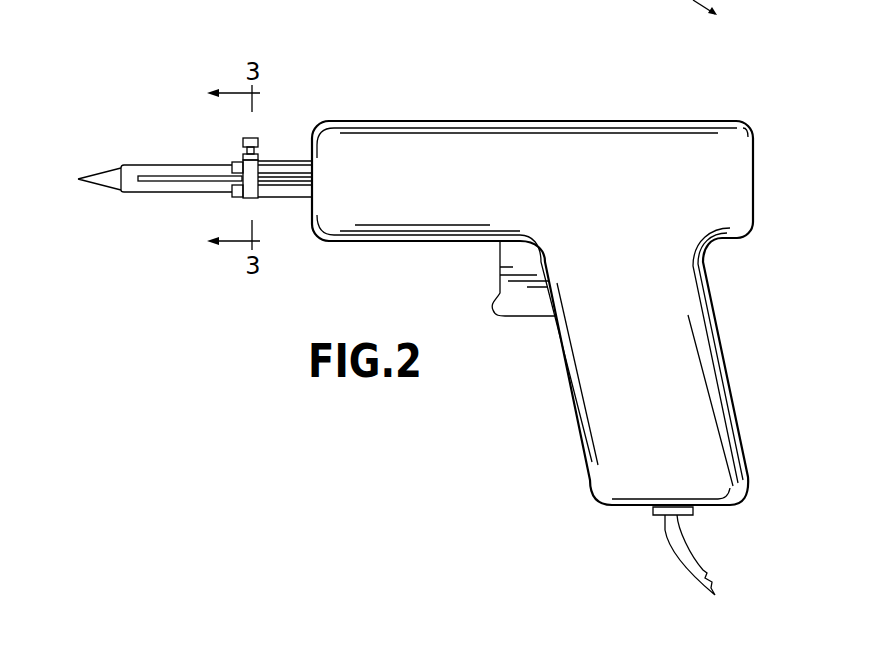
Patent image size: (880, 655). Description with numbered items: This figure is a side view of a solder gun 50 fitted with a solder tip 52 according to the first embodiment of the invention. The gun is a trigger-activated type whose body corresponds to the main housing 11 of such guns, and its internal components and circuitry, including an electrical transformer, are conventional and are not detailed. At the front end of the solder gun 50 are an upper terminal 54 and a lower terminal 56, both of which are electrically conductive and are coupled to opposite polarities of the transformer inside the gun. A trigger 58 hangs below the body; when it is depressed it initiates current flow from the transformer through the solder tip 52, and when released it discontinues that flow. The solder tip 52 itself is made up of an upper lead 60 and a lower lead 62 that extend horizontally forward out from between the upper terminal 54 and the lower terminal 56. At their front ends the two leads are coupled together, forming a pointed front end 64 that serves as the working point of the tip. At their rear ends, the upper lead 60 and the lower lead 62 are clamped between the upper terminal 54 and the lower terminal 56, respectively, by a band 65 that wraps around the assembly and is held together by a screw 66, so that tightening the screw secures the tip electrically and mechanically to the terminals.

The main housing 11 is at (722, 351).
The solder gun 50 is at (552, 257).
The solder tip 52 is at (184, 185).
The upper terminal 54 is at (297, 160).
The lower terminal 56 is at (289, 199).
The trigger 58 is at (525, 307).
The upper lead 60 is at (152, 165).
The lower lead 62 is at (152, 193).
The pointed front end 64 is at (78, 178).
The band 65 is at (243, 198).
The screw 66 is at (243, 141).